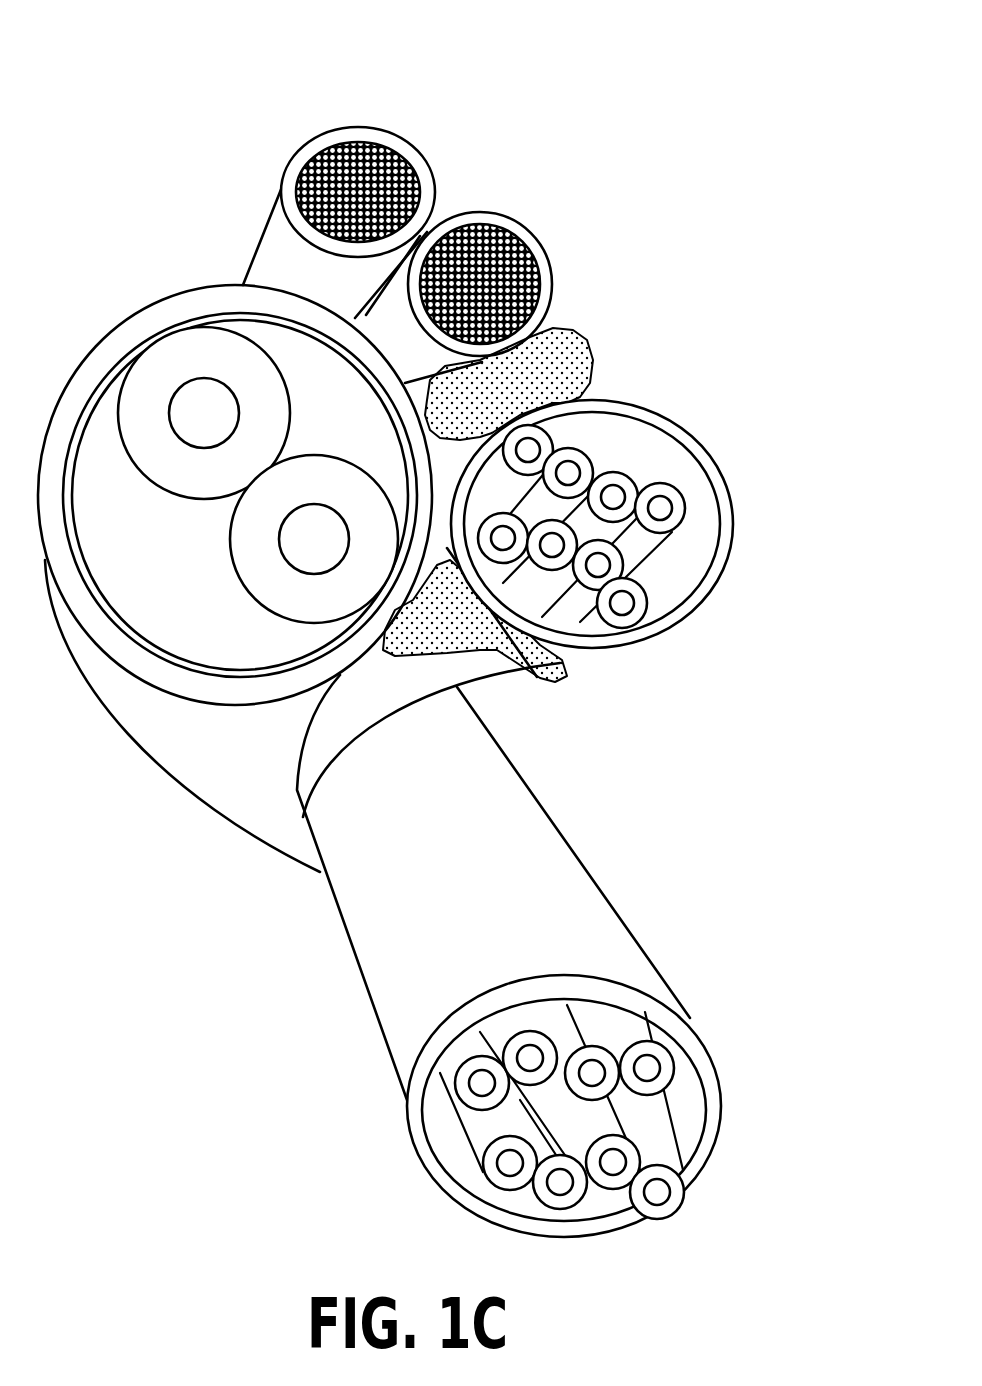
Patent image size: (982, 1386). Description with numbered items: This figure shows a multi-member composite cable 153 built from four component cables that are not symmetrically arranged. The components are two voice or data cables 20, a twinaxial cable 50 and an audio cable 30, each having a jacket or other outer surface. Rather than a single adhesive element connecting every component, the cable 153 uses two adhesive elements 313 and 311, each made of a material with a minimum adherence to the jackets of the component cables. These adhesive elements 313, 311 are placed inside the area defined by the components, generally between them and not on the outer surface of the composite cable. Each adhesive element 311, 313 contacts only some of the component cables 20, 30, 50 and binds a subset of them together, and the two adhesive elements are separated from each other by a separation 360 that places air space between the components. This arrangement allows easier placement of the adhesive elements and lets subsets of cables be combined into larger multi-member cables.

The multi-member cable 153 is at (420, 618).
The twinaxial cable 50 is at (112, 332).
The audio cable 30 is at (480, 212).
The voice or data cable 20 is at (670, 432).
The adhesive element 313 is at (570, 348).
The adhesive element 311 is at (560, 668).
The separation 360 is at (533, 683).